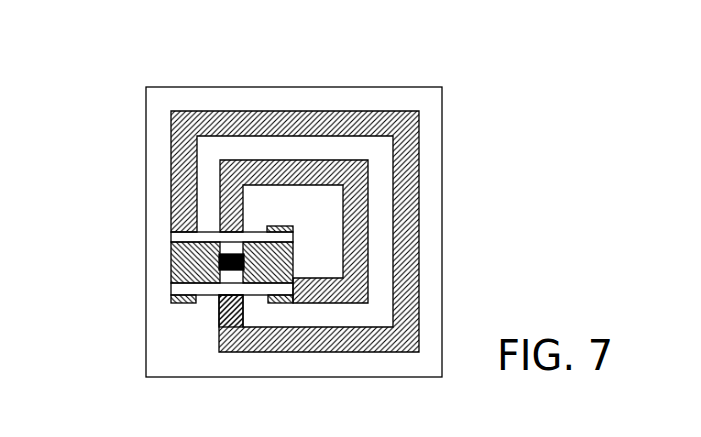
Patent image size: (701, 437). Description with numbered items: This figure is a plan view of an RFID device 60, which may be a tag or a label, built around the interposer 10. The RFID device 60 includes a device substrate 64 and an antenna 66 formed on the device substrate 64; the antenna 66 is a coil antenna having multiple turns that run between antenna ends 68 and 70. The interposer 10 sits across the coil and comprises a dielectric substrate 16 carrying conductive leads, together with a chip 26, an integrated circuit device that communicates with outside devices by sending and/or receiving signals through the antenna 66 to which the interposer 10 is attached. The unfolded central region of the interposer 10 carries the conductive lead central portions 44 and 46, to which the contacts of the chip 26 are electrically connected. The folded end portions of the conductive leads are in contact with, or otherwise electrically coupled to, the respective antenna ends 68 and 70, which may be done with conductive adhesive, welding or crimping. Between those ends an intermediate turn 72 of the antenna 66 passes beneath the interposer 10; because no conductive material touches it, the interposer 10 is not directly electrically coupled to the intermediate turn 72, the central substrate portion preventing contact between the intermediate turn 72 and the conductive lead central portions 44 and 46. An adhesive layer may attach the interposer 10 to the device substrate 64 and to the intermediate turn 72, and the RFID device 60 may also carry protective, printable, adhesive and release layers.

The RFID device 60 is at (125, 75).
The device substrate 64 is at (182, 95).
The antenna 66 is at (423, 132).
The interposer 10 is at (160, 289).
The dielectric substrate 16 is at (260, 292).
The conductive lead central portion 44 is at (172, 253).
The conductive lead central portion 46 is at (260, 247).
The chip 26 is at (228, 252).
The antenna end 68 is at (177, 295).
The antenna end 70 is at (278, 302).
The intermediate turn 72 is at (222, 323).